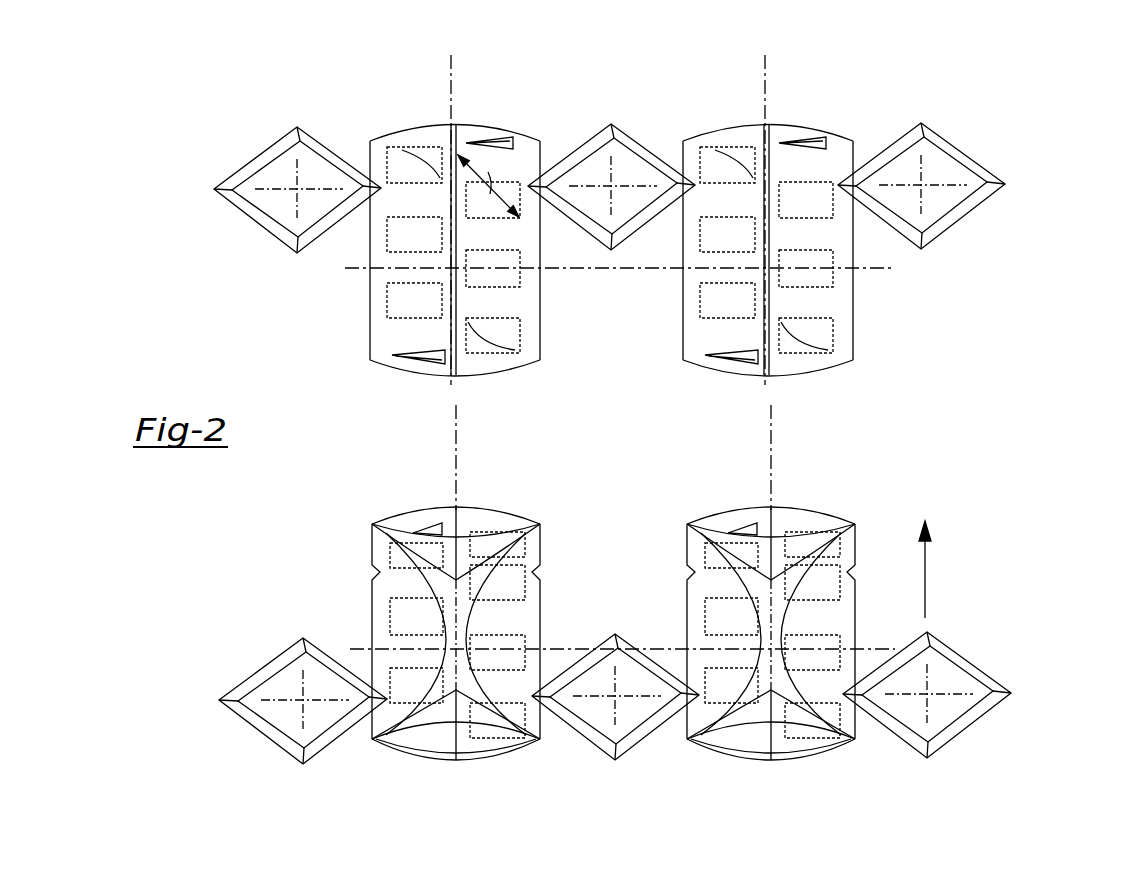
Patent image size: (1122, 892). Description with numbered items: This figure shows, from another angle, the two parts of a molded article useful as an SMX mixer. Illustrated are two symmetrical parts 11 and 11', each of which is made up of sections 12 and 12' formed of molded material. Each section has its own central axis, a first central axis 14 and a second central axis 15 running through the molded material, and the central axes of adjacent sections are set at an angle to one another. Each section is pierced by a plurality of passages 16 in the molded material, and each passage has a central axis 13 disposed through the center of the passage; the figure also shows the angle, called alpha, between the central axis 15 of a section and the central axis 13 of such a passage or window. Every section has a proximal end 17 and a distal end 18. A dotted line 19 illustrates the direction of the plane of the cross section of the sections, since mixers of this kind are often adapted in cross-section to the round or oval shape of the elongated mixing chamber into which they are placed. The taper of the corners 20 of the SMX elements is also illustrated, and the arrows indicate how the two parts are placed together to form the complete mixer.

The symmetrical part 11 is at (963, 186).
The symmetrical part 11' is at (969, 639).
The section 12 is at (612, 442).
The section 12' is at (624, 447).
The central axis of passage 13 is at (502, 200).
The central axis 14 is at (297, 190).
The central axis 15 is at (452, 116).
The passages 16 is at (400, 232).
The proximal end 17 is at (540, 133).
The distal end 18 is at (825, 365).
The dotted line 19 is at (620, 457).
The taper of the corners 20 is at (541, 611).